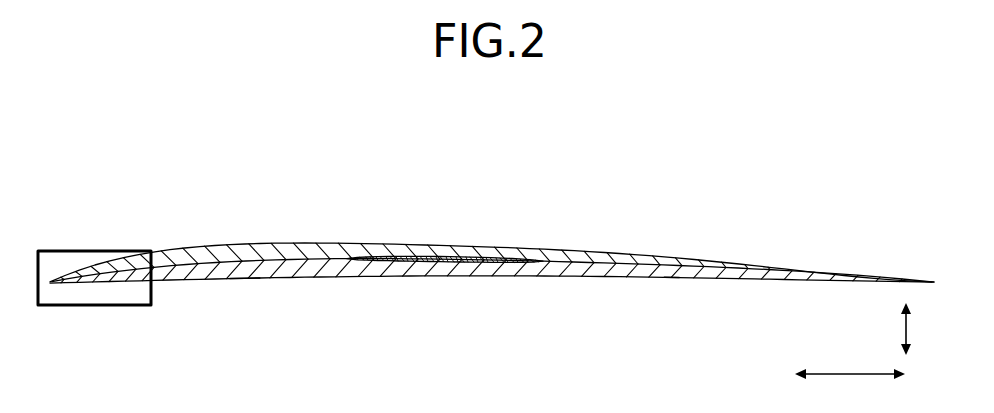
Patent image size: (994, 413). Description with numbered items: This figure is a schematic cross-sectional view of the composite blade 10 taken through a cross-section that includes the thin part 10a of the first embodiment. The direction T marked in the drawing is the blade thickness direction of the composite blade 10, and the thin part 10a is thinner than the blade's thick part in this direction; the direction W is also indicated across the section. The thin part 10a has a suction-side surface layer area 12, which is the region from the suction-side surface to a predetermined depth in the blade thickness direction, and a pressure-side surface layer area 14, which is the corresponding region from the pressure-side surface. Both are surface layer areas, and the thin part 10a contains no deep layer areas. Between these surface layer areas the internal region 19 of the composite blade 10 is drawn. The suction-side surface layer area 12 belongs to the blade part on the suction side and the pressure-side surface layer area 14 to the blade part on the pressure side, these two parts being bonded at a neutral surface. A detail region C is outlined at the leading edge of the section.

The composite blade 10 is at (688, 212).
The thin part 10a is at (240, 279).
The suction-side surface layer area 12 is at (293, 240).
The pressure-side surface layer area 14 is at (295, 280).
The internal region 19 is at (435, 263).
The leading edge region (detail C) C is at (92, 251).
The blade thickness direction T is at (915, 329).
The width W is at (850, 389).